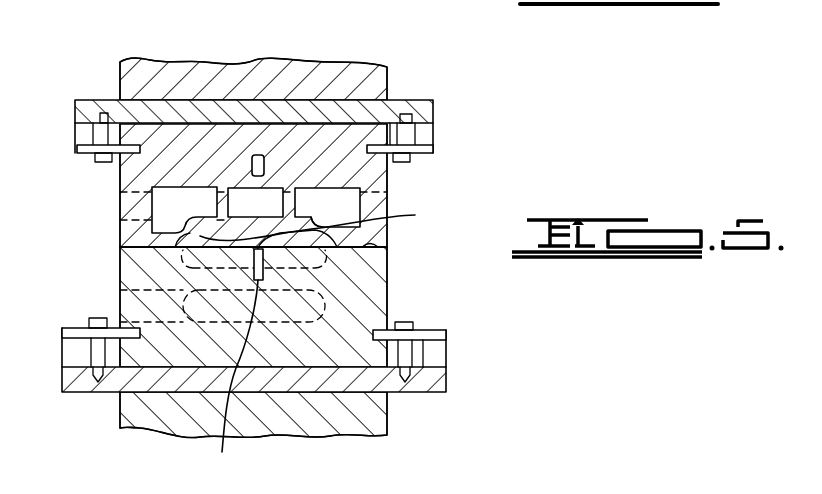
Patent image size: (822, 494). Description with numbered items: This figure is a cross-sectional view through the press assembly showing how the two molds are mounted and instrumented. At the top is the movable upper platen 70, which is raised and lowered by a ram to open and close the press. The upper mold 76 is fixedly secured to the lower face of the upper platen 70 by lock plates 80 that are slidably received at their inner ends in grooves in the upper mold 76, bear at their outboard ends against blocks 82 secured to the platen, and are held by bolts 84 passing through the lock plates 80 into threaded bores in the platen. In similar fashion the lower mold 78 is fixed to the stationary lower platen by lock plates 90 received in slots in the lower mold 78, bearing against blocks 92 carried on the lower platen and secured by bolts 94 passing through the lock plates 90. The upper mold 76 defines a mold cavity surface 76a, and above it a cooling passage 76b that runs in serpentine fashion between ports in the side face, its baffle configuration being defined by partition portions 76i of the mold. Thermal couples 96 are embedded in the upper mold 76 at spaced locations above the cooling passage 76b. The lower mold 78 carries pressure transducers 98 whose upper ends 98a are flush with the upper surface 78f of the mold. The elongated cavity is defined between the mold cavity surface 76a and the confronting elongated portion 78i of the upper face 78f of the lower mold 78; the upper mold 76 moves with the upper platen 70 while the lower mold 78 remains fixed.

The movable upper platen 70 is at (393, 88).
The upper mold 76 is at (112, 228).
The mold cavity surface 76a is at (243, 232).
The cooling passage 76b is at (174, 205).
The partition portions 76i is at (321, 188).
The lower mold 78 is at (397, 297).
The upper surface of the lower mold 78f is at (365, 244).
The elongated portion of the upper face 78i is at (200, 236).
The lock plates 80 is at (80, 148).
The blocks 82 is at (83, 131).
The bolts 84 is at (407, 162).
The lock plates 90 is at (432, 332).
The blocks 92 is at (68, 352).
The bolts 94 is at (103, 318).
The thermal couples 96 is at (264, 165).
The pressure transducers 98 is at (235, 365).
The upper ends of the pressure transducers 98a is at (337, 225).